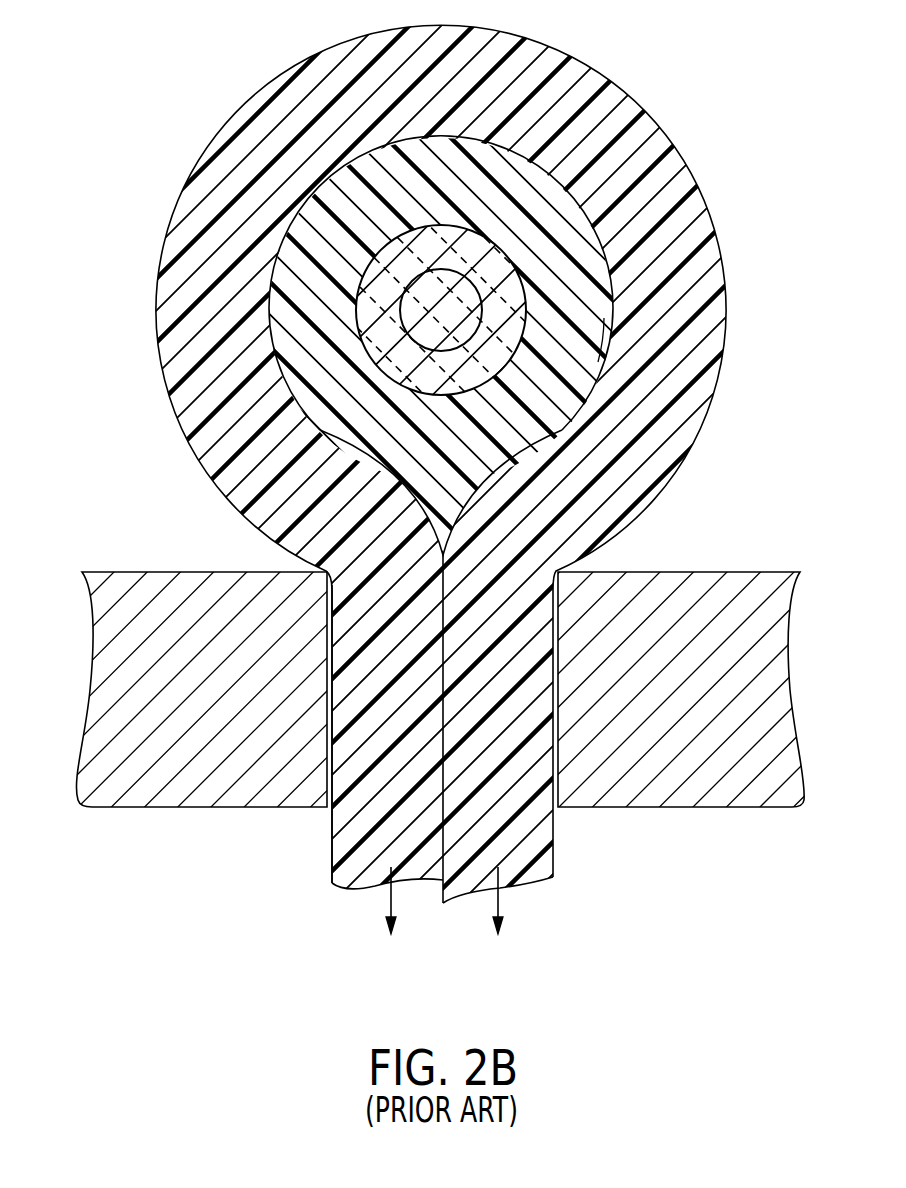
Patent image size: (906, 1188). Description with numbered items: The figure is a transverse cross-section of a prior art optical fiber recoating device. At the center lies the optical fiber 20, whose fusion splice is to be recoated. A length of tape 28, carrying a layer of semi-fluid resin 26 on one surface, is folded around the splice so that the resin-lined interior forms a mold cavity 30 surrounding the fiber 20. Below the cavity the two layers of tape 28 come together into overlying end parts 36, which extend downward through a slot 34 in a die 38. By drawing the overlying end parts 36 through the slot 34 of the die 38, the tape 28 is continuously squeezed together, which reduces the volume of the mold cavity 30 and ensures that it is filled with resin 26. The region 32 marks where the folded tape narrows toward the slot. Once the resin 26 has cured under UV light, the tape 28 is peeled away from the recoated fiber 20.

The optical fiber 20 is at (370, 292).
The semi-fluid resin 26 is at (610, 298).
The tape 28 is at (663, 168).
The mold cavity 30 is at (603, 340).
The neck region 32 is at (450, 497).
The slot 34 is at (350, 595).
The overlying end parts 36 is at (360, 838).
The die 38 is at (685, 788).